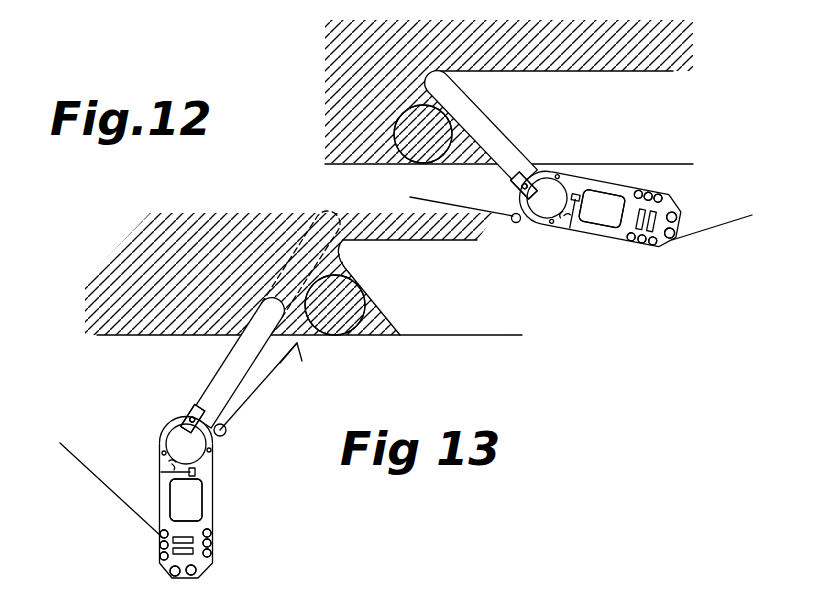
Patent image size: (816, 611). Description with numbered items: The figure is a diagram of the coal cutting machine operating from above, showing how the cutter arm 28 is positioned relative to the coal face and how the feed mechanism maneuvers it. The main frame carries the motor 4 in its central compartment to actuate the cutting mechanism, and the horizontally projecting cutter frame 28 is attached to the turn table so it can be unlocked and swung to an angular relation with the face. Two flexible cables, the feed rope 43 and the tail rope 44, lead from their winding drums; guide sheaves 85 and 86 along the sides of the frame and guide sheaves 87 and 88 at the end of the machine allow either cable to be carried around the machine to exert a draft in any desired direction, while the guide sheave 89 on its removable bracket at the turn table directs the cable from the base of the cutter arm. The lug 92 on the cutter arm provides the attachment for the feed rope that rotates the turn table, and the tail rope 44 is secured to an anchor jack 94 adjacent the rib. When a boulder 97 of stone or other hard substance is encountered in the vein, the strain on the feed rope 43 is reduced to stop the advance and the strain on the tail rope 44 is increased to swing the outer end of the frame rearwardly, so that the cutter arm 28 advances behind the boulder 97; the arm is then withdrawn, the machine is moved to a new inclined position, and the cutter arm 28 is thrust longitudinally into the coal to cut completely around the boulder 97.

In FIG. 12, the motor 4 is at (598, 207).
In FIG. 13, the motor 4 is at (190, 498).
In FIG. 12, the cutter frame 28 is at (493, 127).
In FIG. 13, the cutter frame 28 is at (227, 367).
In FIG. 12, the feed rope 43 is at (578, 233).
In FIG. 13, the feed rope 43 is at (122, 500).
In FIG. 12, the tail rope 44 is at (741, 223).
In FIG. 13, the tail rope 44 is at (268, 380).
In FIG. 12, the guide sheave 85 is at (634, 243).
In FIG. 13, the guide sheave 85 is at (161, 547).
In FIG. 12, the guide sheave 86 is at (647, 193).
In FIG. 13, the guide sheave 86 is at (212, 536).
In FIG. 12, the guide sheave 87 is at (669, 239).
In FIG. 13, the guide sheave 87 is at (175, 579).
In FIG. 12, the guide sheave 88 is at (673, 213).
In FIG. 13, the guide sheave 88 is at (193, 579).
In FIG. 12, the guide sheave 89 is at (517, 223).
In FIG. 13, the guide sheave 89 is at (235, 440).
In FIG. 12, the lug 92 is at (531, 166).
In FIG. 13, the lug 92 is at (192, 413).
In FIG. 13, the anchor jack 94 is at (305, 357).
In FIG. 12, the boulder 97 is at (414, 150).
In FIG. 13, the boulder 97 is at (352, 313).